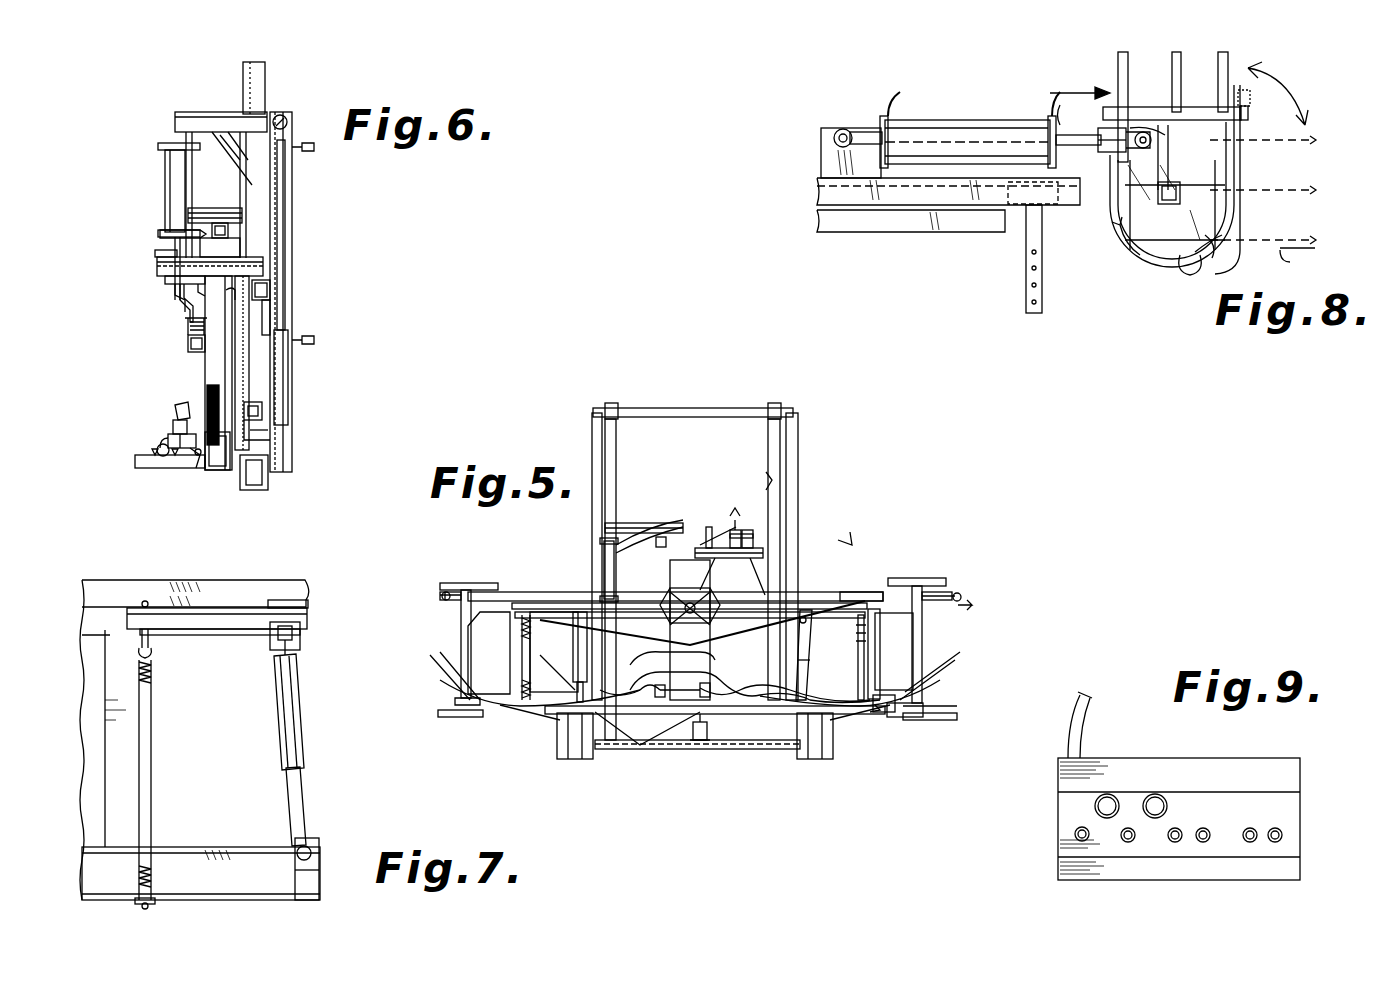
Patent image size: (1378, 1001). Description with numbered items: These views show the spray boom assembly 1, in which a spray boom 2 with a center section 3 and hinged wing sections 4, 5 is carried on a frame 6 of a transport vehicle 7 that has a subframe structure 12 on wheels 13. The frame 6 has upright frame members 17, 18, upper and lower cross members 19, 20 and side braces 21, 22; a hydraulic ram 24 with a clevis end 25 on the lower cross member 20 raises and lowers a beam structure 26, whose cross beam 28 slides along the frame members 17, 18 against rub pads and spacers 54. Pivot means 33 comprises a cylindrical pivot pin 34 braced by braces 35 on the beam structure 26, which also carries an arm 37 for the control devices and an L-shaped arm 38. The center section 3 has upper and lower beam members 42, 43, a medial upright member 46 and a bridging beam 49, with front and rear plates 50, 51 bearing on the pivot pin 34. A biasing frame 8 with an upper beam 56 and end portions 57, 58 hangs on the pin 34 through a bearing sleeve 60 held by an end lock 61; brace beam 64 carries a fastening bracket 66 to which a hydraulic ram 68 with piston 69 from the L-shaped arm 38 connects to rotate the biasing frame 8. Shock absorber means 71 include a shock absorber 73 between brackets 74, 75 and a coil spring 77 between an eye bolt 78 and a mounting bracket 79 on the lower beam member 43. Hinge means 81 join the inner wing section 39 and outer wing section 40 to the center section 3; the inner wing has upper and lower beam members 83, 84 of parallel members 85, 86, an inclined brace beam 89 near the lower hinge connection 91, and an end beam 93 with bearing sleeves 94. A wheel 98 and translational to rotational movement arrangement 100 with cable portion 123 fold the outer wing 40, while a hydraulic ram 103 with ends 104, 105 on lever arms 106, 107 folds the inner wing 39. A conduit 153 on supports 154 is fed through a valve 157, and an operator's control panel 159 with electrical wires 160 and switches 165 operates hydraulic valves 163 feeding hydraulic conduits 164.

In FIG. 5, the spray boom assembly 1 is at (848, 545).
In FIG. 7, the spray boom 2 is at (175, 581).
In FIG. 5, the spray boom 2 is at (850, 592).
In FIG. 6, the center section 3 is at (206, 368).
In FIG. 7, the center section 3 is at (272, 588).
In FIG. 5, the center section 3 is at (500, 592).
In FIG. 8, the center section 3 is at (882, 207).
In FIG. 5, the wing section 4 is at (440, 596).
In FIG. 5, the wing section 5 is at (950, 592).
In FIG. 8, the wing section 5 is at (1218, 82).
In FIG. 6, the frame 6 is at (268, 438).
In FIG. 5, the frame 6 is at (768, 448).
In FIG. 5, the transport vehicle 7 is at (706, 540).
In FIG. 6, the biasing frame 8 is at (190, 340).
In FIG. 7, the biasing frame 8 is at (220, 636).
In FIG. 5, the biasing frame 8 is at (562, 600).
In FIG. 5, the subframe structure 12 is at (665, 738).
In FIG. 5, the wheels 13 is at (836, 742).
In FIG. 6, the upright frame member 17 is at (265, 86).
In FIG. 5, the upright frame member 17 is at (616, 432).
In FIG. 5, the upright frame member 18 is at (768, 480).
In FIG. 5, the upper cross member 19 is at (725, 408).
In FIG. 5, the lower cross member 20 is at (740, 750).
In FIG. 5, the side brace 21 is at (590, 450).
In FIG. 5, the side brace 22 is at (798, 432).
In FIG. 6, the hydraulic ram 24 is at (290, 262).
In FIG. 5, the clevis end 25 is at (700, 745).
In FIG. 6, the beam structure 26 is at (290, 118).
In FIG. 5, the beam structure 26 is at (650, 524).
In FIG. 6, the cross beam 28 is at (255, 440).
In FIG. 6, the pivot means 33 is at (168, 278).
In FIG. 5, the pivot means 33 is at (700, 600).
In FIG. 6, the pivot pin 34 is at (180, 290).
In FIG. 5, the pivot pin 34 is at (688, 595).
In FIG. 6, the braces 35 is at (260, 290).
In FIG. 5, the arm 37 is at (765, 568).
In FIG. 6, the L-shaped arm 38 is at (213, 113).
In FIG. 5, the L-shaped arm 38 is at (636, 523).
In FIG. 5, the inner wing section 39 is at (950, 608).
In FIG. 8, the inner wing section 39 is at (1110, 105).
In FIG. 8, the outer wing section 40 is at (1278, 85).
In FIG. 5, the upper beam member 42 is at (876, 606).
In FIG. 8, the upper beam member 42 is at (1072, 205).
In FIG. 6, the lower beam member 43 is at (222, 472).
In FIG. 7, the lower beam member 43 is at (246, 886).
In FIG. 5, the lower beam member 43 is at (498, 712).
In FIG. 6, the upright member 46 is at (266, 330).
In FIG. 6, the bridging beam 49 is at (222, 223).
In FIG. 6, the front plate 50 is at (190, 300).
In FIG. 6, the rear plate 51 is at (236, 300).
In FIG. 6, the rub pads and spacers 54 is at (207, 400).
In FIG. 7, the upper beam 56 is at (298, 602).
In FIG. 7, the end portion 57 is at (230, 608).
In FIG. 5, the end portion 57 is at (545, 603).
In FIG. 5, the end portion 58 is at (856, 610).
In FIG. 6, the bearing sleeve 60 is at (157, 268).
In FIG. 6, the end lock 61 is at (156, 253).
In FIG. 6, the brace beam 64 is at (188, 320).
In FIG. 6, the fastening bracket 66 is at (200, 294).
In FIG. 6, the hydraulic ram 68 is at (165, 168).
In FIG. 5, the hydraulic ram 68 is at (604, 560).
In FIG. 6, the piston 69 is at (160, 236).
In FIG. 6, the shock absorber means 71 is at (175, 412).
In FIG. 7, the shock absorber means 71 is at (302, 740).
In FIG. 5, the shock absorber means 71 is at (572, 631).
In FIG. 5, the shock absorber 73 is at (812, 648).
In FIG. 7, the bracket 74 is at (298, 648).
In FIG. 6, the bracket 75 is at (195, 460).
In FIG. 7, the bracket 75 is at (312, 860).
In FIG. 7, the coil spring 77 is at (151, 672).
In FIG. 5, the coil spring 77 is at (520, 630).
In FIG. 7, the eye bolt 78 is at (151, 645).
In FIG. 7, the mounting bracket 79 is at (150, 905).
In FIG. 8, the hinge means 81 is at (1120, 232).
In FIG. 5, the upper beam member 83 is at (450, 600).
In FIG. 5, the lower beam member 84 is at (440, 718).
In FIG. 8, the parallel member 85 is at (1118, 80).
In FIG. 8, the parallel member 86 is at (1248, 112).
In FIG. 8, the inclined brace beam 89 is at (1176, 80).
In FIG. 5, the lower hinge connection 91 is at (912, 722).
In FIG. 8, the end beam 93 is at (1185, 195).
In FIG. 5, the bearing sleeves 94 is at (894, 651).
In FIG. 5, the wheel 98 is at (470, 583).
In FIG. 8, the wheel 98 is at (1205, 258).
In FIG. 6, the translational to rotational movement arrangement 100 is at (232, 208).
In FIG. 5, the translational to rotational movement arrangement 100 is at (914, 578).
In FIG. 8, the translational to rotational movement arrangement 100 is at (1250, 160).
In FIG. 8, the hydraulic ram 103 is at (950, 120).
In FIG. 8, the ram end 104 is at (858, 128).
In FIG. 8, the ram end 105 is at (1130, 128).
In FIG. 8, the lever arm 106 is at (828, 164).
In FIG. 8, the lever arm 107 is at (1104, 152).
In FIG. 8, the cable portion 123 is at (1240, 230).
In FIG. 6, the conduit 153 is at (145, 440).
In FIG. 5, the conduit 153 is at (870, 712).
In FIG. 6, the supports 154 is at (148, 470).
In FIG. 5, the valve 157 is at (718, 692).
In FIG. 9, the operator's control panel 159 is at (1288, 804).
In FIG. 9, the electrical wires 160 is at (1084, 722).
In FIG. 5, the hydraulic valves 163 is at (750, 530).
In FIG. 5, the hydraulic conduits 164 is at (730, 530).
In FIG. 9, the switches 165 is at (1270, 830).